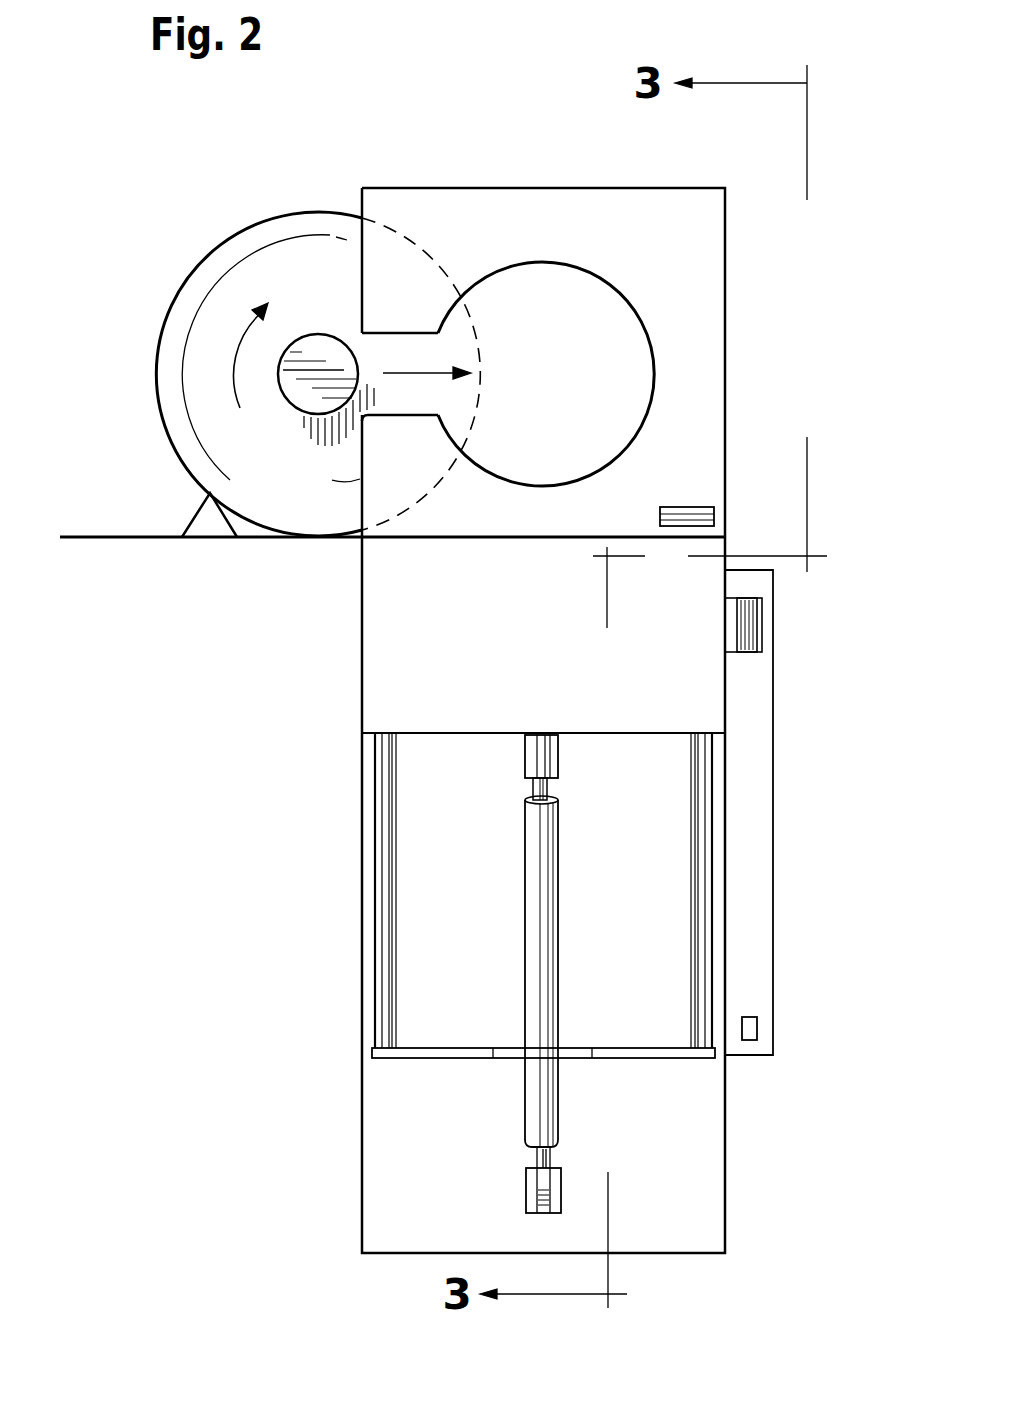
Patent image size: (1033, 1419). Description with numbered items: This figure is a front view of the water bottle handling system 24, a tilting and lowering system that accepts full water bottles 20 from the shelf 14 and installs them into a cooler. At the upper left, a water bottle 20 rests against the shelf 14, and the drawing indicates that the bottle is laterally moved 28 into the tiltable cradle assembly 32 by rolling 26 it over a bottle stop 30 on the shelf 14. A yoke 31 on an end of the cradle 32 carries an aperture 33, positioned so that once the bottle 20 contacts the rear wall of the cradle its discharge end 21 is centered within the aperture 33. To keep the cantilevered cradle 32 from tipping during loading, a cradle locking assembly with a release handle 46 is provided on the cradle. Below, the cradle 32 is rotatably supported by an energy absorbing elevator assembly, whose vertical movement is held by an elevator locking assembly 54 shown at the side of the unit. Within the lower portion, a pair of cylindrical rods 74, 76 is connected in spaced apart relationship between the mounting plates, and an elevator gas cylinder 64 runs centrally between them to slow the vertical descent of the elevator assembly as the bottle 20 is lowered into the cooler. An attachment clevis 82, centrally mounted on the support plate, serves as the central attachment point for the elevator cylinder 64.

The shelf 14 is at (112, 540).
The water bottle 20 is at (187, 276).
The discharge end 21 is at (318, 338).
The water bottle handling system 24 is at (326, 1127).
The rolling 26 is at (233, 363).
The lateral movement 28 is at (420, 377).
The bottle stop 30 is at (198, 509).
The yoke 31 is at (358, 220).
The tiltable cradle assembly 32 is at (480, 100).
The aperture 33 is at (590, 270).
The release handle 46 is at (692, 508).
The elevator locking assembly 54 is at (795, 621).
The elevator gas cylinder 64 is at (525, 958).
The cylindrical rod 74 is at (693, 817).
The cylindrical rod 76 is at (395, 872).
The attachment clevis 82 is at (525, 755).